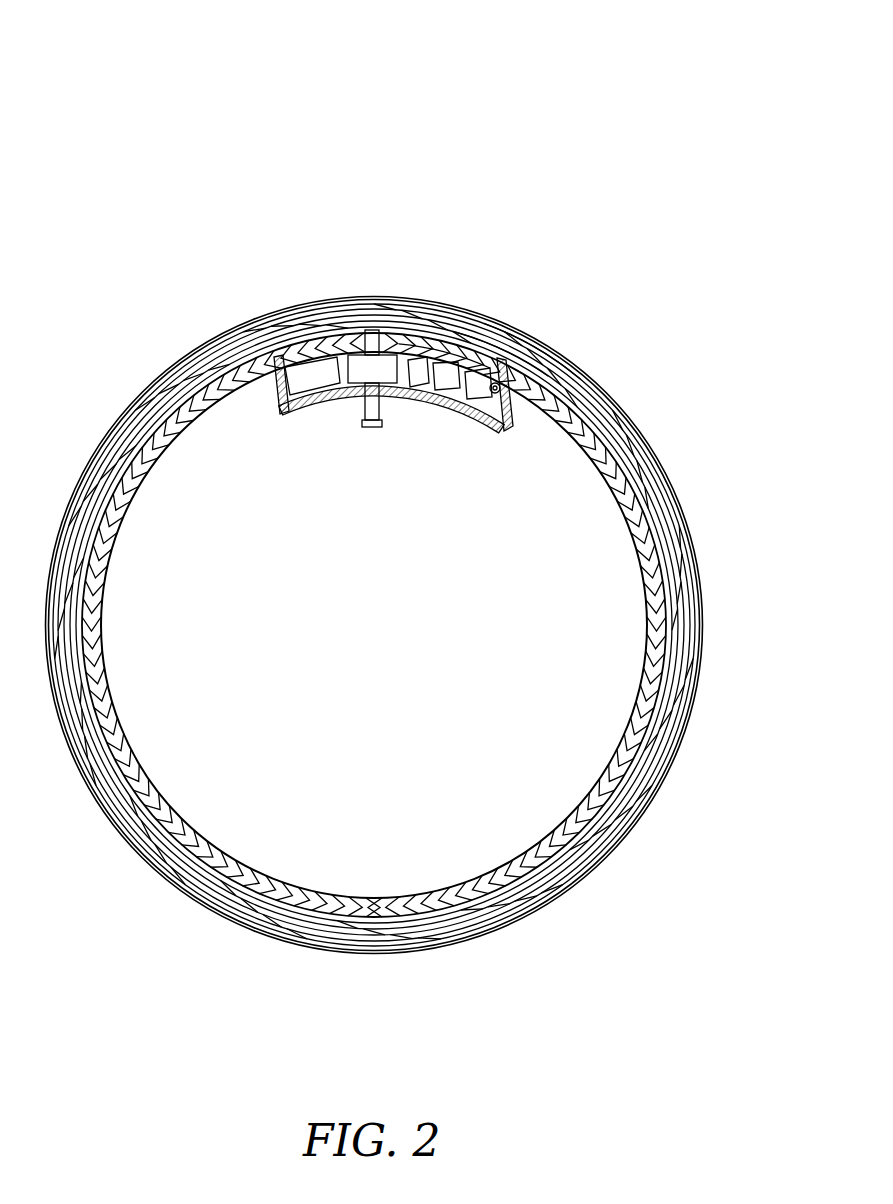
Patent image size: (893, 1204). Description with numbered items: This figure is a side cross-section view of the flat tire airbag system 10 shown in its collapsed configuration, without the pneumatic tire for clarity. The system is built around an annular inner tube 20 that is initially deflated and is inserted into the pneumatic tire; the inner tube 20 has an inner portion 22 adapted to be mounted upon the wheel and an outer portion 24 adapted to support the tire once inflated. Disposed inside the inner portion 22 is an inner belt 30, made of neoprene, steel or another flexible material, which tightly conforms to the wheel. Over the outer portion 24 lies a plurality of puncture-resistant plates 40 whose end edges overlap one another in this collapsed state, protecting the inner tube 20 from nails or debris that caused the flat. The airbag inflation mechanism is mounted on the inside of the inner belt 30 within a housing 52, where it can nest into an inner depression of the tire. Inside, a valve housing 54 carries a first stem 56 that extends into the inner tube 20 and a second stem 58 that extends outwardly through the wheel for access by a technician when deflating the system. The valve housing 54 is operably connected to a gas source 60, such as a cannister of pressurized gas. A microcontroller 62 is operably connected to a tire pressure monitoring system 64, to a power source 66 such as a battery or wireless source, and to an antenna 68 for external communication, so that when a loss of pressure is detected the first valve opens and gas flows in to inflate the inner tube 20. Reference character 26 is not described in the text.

The flat tire airbag system 10 is at (677, 130).
The inner tube 20 is at (374, 625).
The outer shell 26 is at (185, 358).
The inner portion 22 is at (208, 380).
The outer portion 24 is at (108, 455).
The puncture-resistant plates 40 is at (654, 452).
The inner belt 30 is at (118, 620).
The gas source 60 is at (282, 410).
The valve housing 54 is at (346, 410).
The first stem 56 is at (367, 332).
The second stem 58 is at (372, 430).
The housing 52 is at (470, 418).
The antenna 68 is at (514, 420).
The microcontroller 62 is at (430, 347).
The tire pressure monitoring system 64 is at (485, 336).
The power source 66 is at (523, 345).